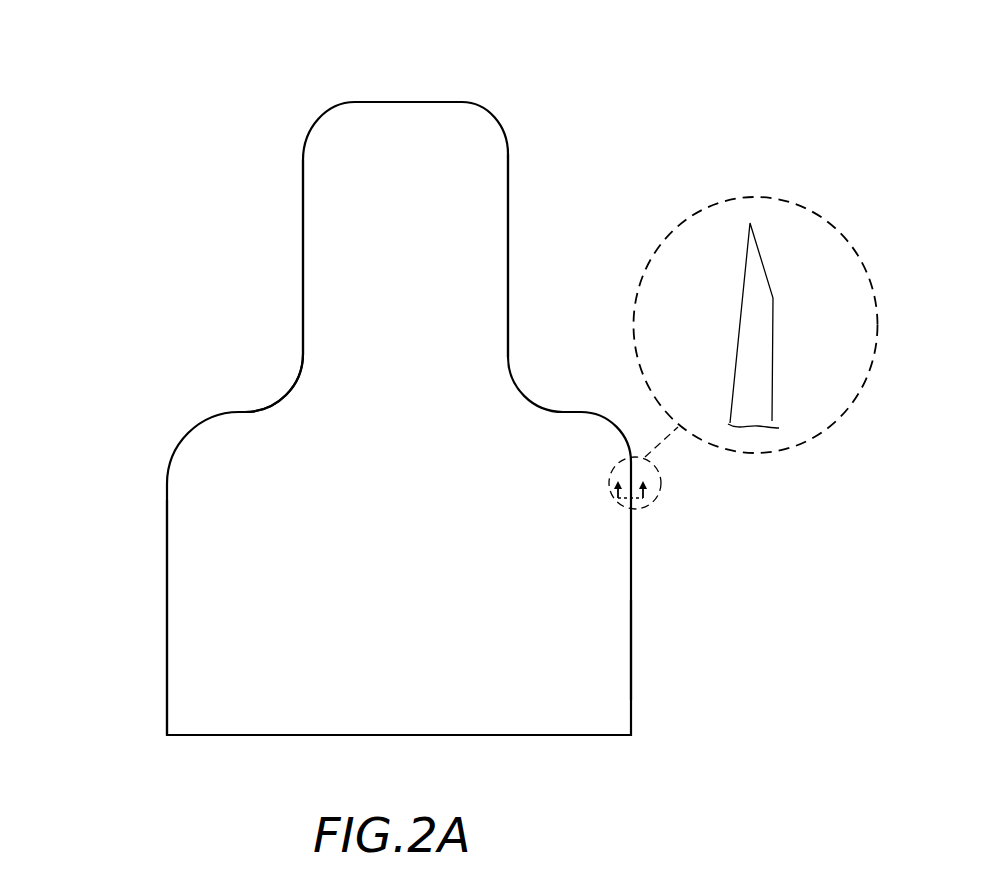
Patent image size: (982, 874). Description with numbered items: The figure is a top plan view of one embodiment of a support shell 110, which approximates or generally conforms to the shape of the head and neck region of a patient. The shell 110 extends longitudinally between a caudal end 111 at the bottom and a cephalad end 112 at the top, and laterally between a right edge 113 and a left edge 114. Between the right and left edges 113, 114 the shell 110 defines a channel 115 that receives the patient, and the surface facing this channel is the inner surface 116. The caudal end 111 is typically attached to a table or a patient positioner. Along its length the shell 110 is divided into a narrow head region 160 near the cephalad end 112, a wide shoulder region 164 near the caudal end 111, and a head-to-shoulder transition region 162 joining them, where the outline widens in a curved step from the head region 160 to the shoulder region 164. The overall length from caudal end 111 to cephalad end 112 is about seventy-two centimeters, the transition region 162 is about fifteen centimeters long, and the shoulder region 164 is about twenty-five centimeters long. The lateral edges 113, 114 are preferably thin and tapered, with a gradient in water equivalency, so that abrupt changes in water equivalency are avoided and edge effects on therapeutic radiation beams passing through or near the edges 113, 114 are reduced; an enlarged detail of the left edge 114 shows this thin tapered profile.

The support shell 110 is at (572, 71).
The caudal end 111 is at (475, 735).
The cephalad end 112 is at (391, 102).
The right edge 113 is at (165, 622).
The left edge 114 is at (632, 520).
The channel 115 is at (333, 312).
The inner surface 116 is at (478, 283).
The head region 160 is at (357, 227).
The head-to-shoulder transition region 162 is at (295, 443).
The shoulder region 164 is at (203, 545).